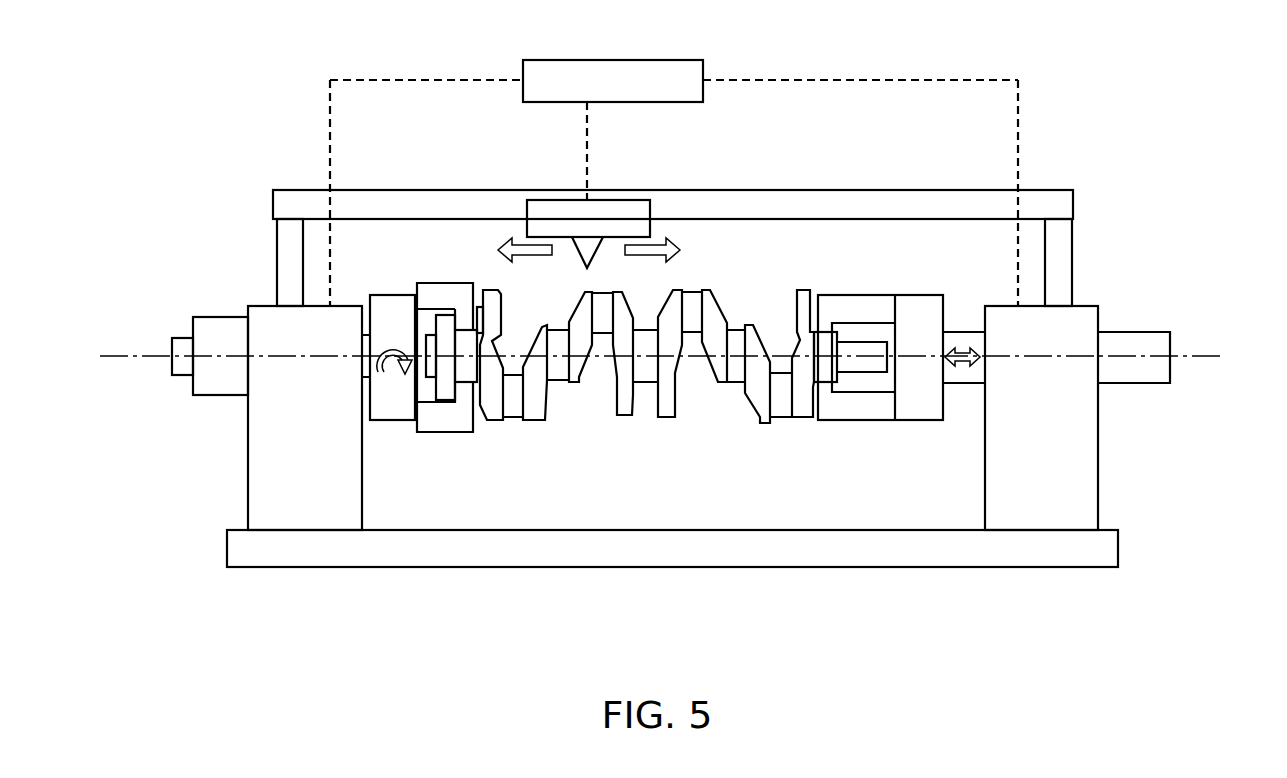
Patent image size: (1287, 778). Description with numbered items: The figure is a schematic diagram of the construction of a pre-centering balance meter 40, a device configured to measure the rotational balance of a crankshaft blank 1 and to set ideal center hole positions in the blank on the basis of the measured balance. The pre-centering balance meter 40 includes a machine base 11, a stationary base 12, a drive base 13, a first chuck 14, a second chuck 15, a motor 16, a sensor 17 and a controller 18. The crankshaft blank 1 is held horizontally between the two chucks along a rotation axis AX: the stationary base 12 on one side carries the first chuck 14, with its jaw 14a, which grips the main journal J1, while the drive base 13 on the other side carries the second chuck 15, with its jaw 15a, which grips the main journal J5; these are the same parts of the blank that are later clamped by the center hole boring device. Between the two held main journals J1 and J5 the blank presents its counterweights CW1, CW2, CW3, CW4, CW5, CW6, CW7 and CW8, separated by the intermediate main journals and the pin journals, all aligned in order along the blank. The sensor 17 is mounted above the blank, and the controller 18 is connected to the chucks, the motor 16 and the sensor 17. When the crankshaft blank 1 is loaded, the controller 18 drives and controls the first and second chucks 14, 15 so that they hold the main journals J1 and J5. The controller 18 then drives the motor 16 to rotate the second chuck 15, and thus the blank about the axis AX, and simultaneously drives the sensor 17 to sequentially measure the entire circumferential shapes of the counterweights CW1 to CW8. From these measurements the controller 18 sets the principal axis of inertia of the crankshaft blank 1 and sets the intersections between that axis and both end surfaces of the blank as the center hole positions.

The crankshaft blank 1 is at (728, 296).
The machine base 11 is at (407, 552).
The stationary base 12 is at (1083, 472).
The drive base 13 is at (263, 494).
The first chuck 14 is at (913, 420).
The tailstock chuck jaw 14a is at (868, 297).
The second chuck 15 is at (384, 420).
The headstock chuck jaw 15a is at (432, 283).
The motor 16 is at (207, 317).
The sensor 17 is at (628, 208).
The controller 18 is at (630, 60).
The pre-centering balance meter 40 is at (1098, 147).
The rotation axis AX is at (1213, 352).
The main journal J1 is at (826, 338).
The main journal J5 is at (467, 333).
The counterweight CW1 is at (797, 418).
The counterweight CW2 is at (759, 423).
The counterweight CW3 is at (718, 382).
The counterweight CW4 is at (662, 417).
The counterweight CW5 is at (620, 415).
The counterweight CW6 is at (575, 378).
The counterweight CW7 is at (535, 408).
The counterweight CW8 is at (490, 405).